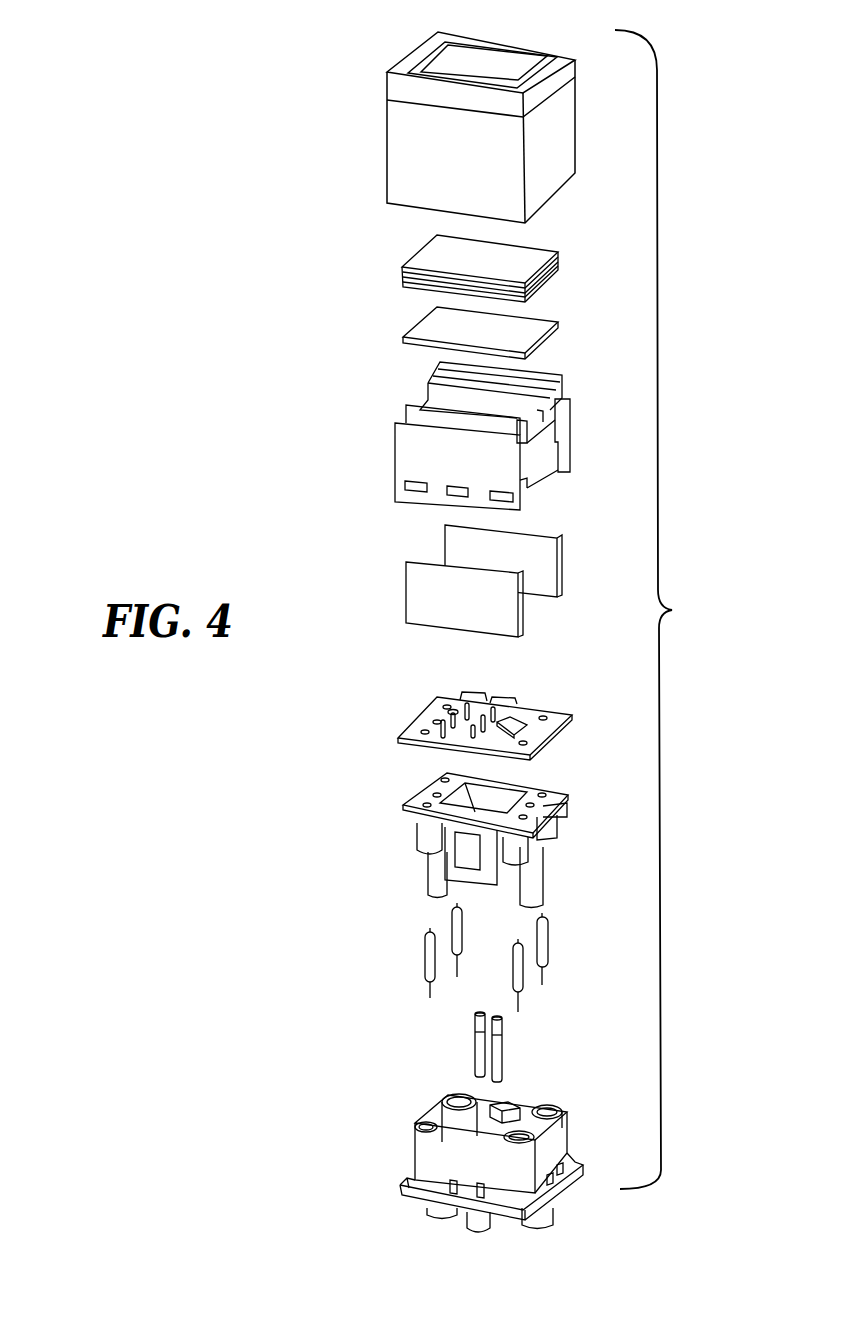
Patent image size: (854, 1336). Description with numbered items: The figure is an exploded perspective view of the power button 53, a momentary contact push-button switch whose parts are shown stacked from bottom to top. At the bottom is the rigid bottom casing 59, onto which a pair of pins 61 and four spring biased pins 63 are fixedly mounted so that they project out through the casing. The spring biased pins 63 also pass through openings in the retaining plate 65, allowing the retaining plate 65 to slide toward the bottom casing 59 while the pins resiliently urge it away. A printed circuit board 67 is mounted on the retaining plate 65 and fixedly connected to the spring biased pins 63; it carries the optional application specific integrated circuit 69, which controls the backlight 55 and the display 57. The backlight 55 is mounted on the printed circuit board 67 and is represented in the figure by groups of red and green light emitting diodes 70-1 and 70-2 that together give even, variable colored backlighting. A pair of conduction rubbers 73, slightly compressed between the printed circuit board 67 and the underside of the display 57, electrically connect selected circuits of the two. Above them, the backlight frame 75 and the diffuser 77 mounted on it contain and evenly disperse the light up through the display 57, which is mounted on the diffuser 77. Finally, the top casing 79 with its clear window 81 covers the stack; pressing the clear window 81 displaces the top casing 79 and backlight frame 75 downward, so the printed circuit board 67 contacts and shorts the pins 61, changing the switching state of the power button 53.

The power button 53 is at (707, 623).
The backlight 55 is at (455, 706).
The display 57 is at (381, 238).
The bottom casing 59 is at (386, 1135).
The pins 61 is at (495, 1043).
The spring biased pins 63 is at (453, 963).
The retaining plate 65 is at (381, 803).
The printed circuit board 67 is at (398, 738).
The application specific integrated circuit 69 is at (523, 721).
The first photodetector 70-1 is at (477, 690).
The second photodetector 70-2 is at (507, 693).
The conduction rubbers 73 is at (462, 547).
The backlight frame 75 is at (370, 418).
The diffuser 77 is at (382, 312).
The top casing 79 is at (433, 118).
The clear window 81 is at (493, 62).